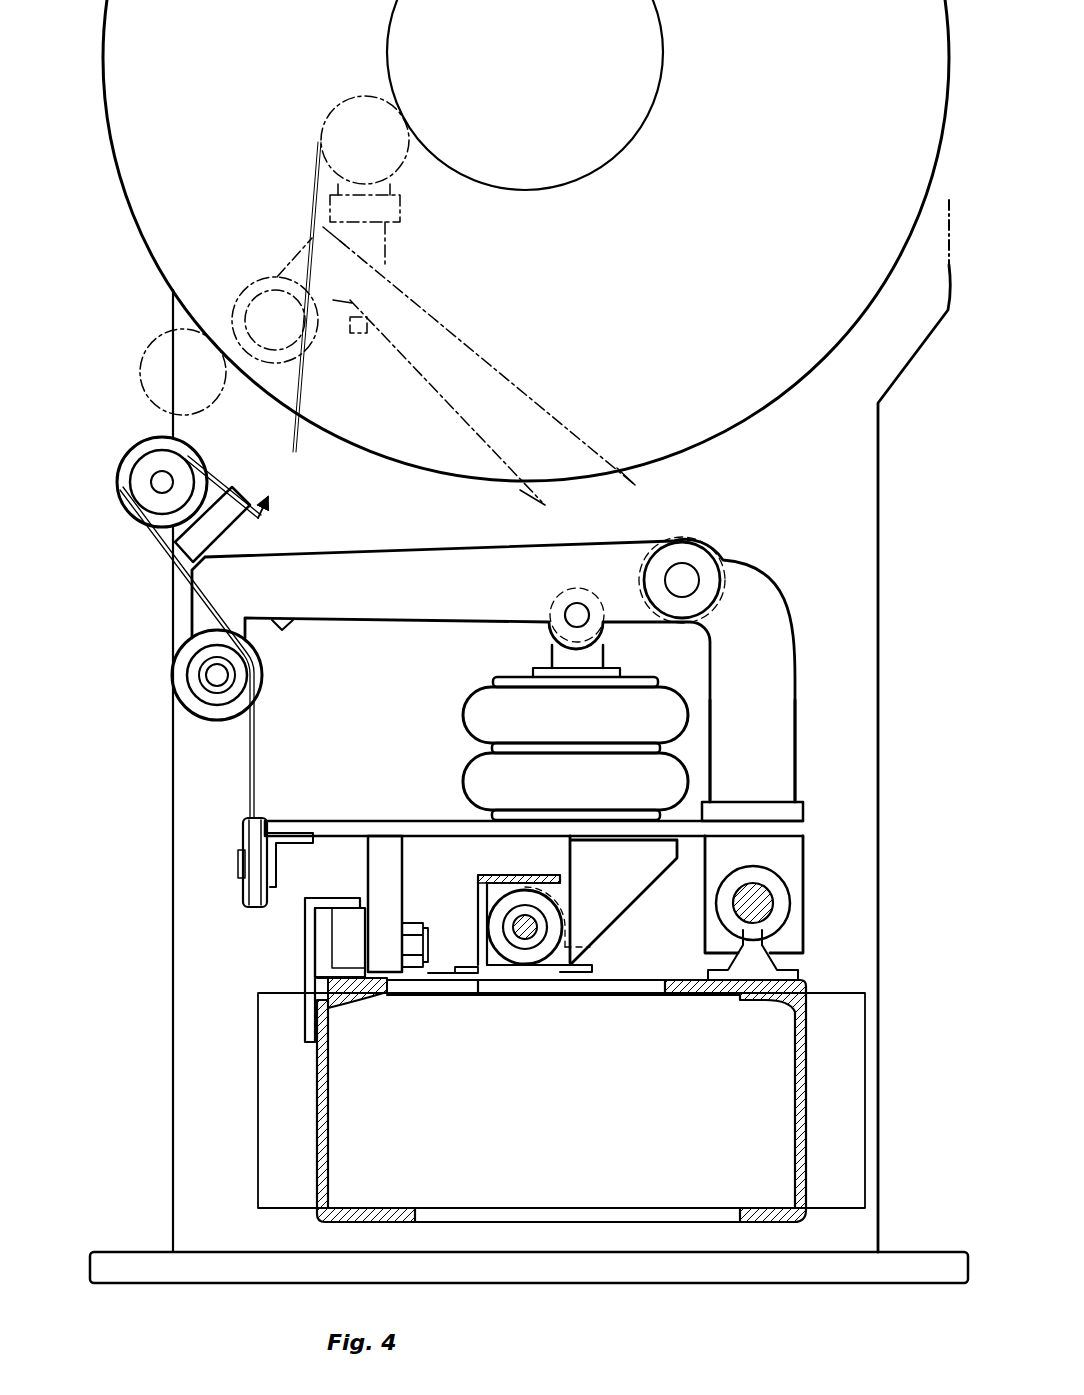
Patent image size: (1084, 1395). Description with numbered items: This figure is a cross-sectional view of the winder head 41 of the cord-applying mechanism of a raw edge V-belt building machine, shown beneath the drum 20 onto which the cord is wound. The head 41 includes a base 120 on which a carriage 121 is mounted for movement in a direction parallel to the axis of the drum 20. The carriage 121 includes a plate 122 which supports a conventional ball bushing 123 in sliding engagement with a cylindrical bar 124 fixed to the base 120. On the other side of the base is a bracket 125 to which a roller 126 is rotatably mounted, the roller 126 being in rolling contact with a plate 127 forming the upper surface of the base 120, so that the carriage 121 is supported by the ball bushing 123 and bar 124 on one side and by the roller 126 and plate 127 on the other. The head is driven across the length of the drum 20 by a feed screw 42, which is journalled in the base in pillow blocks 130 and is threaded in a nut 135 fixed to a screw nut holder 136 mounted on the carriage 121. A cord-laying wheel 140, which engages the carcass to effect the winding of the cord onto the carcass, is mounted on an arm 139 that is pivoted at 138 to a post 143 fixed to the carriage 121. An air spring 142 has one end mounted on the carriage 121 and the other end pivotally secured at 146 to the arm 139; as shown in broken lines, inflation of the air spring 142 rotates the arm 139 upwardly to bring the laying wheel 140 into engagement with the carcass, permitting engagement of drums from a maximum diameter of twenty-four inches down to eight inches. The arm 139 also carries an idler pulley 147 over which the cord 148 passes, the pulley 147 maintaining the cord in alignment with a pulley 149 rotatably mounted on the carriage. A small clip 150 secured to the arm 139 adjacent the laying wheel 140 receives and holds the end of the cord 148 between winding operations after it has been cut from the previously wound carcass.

The drum 20 is at (517, 192).
The winder head 41 is at (144, 757).
The screw 42 is at (524, 942).
The base 120 is at (308, 1140).
The carriage 121 is at (797, 832).
The plate 122 is at (452, 801).
The ball bushing 123 is at (786, 906).
The cylindrical bar 124 is at (765, 897).
The bracket 125 is at (392, 868).
The roller 126 is at (345, 948).
The plate 127 is at (394, 992).
The pillow block 130 is at (592, 950).
The nut 135 is at (538, 940).
The screw nut holder 136 is at (582, 904).
The pivot 138 is at (690, 576).
The arm 139 is at (470, 532).
The cord-laying wheel 140 is at (126, 459).
The air spring 142 is at (494, 727).
The post 143 is at (794, 731).
The pivot 146 is at (573, 603).
The idler pulley 147 is at (222, 719).
The cord 148 is at (256, 758).
The pulley 149 is at (249, 898).
The clip 150 is at (267, 520).